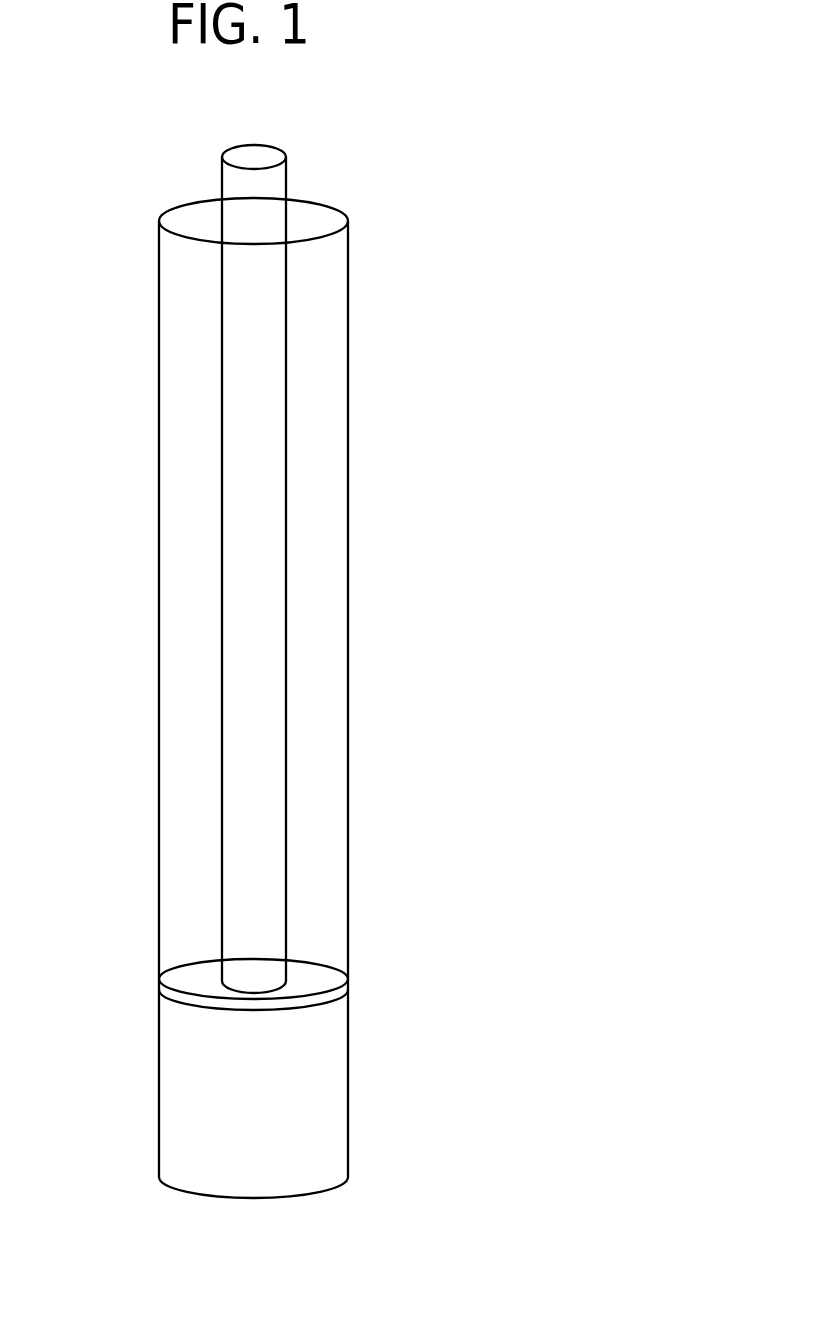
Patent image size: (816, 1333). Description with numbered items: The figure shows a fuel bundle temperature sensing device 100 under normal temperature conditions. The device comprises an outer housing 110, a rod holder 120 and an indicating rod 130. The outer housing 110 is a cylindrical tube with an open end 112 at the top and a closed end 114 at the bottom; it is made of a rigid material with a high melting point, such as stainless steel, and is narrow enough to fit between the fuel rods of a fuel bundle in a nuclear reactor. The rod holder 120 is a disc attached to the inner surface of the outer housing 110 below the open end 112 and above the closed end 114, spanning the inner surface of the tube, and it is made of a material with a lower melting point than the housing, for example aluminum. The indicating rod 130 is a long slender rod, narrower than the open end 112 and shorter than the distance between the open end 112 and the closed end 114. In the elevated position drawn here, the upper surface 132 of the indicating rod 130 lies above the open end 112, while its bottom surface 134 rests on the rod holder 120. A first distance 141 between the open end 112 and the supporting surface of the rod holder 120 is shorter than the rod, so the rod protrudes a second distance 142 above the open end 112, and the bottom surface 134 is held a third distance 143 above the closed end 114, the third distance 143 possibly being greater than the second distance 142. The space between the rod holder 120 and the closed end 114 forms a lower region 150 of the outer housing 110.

The fuel bundle temperature sensing device 100 is at (512, 165).
The outer housing 110 is at (348, 426).
The open end 112 is at (326, 226).
The closed end 114 is at (322, 1193).
The rod holder 120 is at (188, 985).
The indicating rod 130 is at (285, 330).
The upper surface 132 is at (263, 150).
The bottom surface 134 is at (285, 986).
The first distance 141 is at (132, 232).
The second distance 142 is at (132, 158).
The third distance 143 is at (397, 985).
The lower region 150 is at (262, 1045).